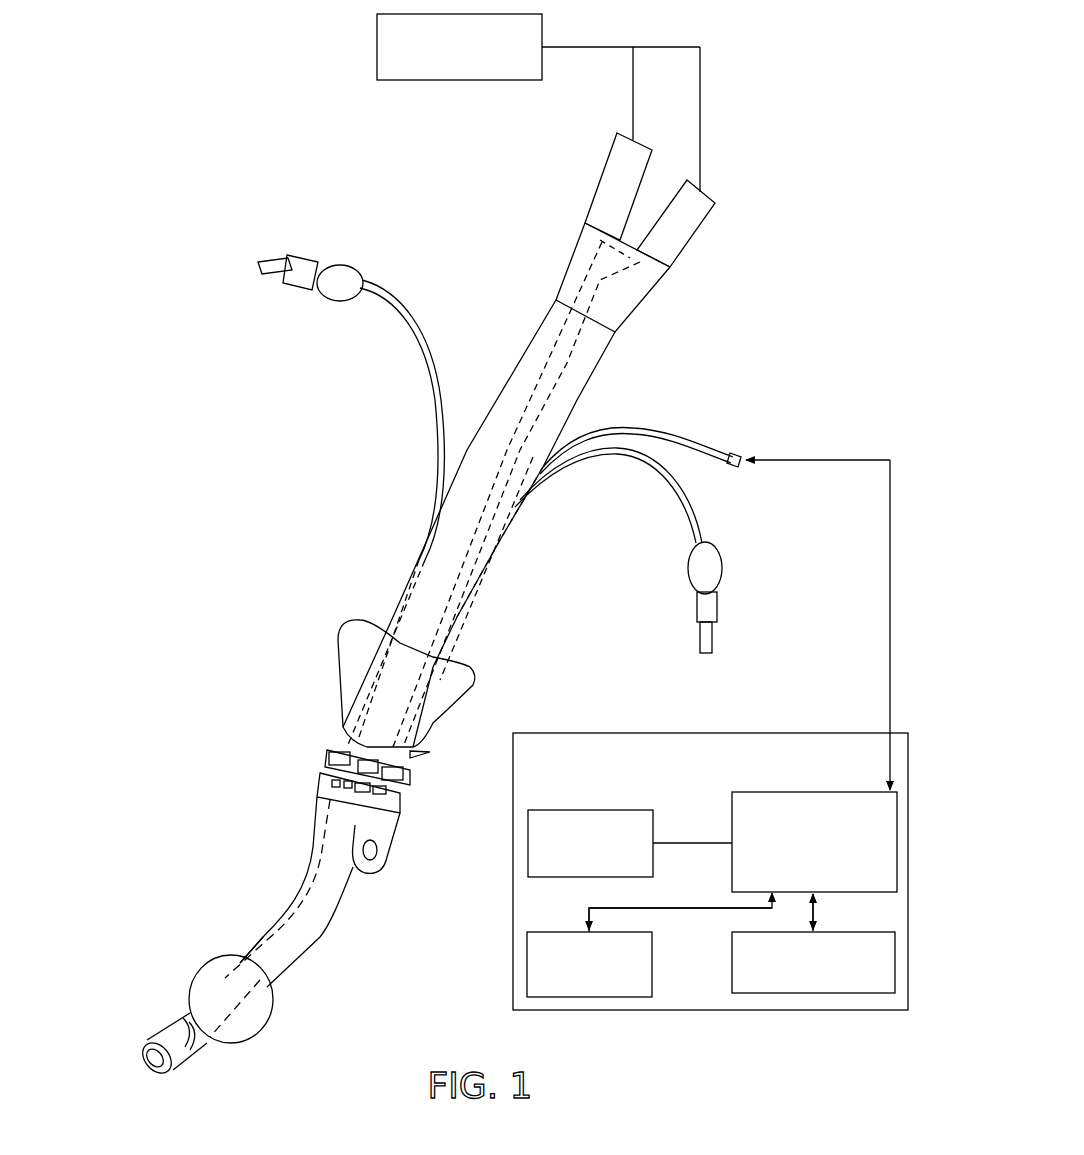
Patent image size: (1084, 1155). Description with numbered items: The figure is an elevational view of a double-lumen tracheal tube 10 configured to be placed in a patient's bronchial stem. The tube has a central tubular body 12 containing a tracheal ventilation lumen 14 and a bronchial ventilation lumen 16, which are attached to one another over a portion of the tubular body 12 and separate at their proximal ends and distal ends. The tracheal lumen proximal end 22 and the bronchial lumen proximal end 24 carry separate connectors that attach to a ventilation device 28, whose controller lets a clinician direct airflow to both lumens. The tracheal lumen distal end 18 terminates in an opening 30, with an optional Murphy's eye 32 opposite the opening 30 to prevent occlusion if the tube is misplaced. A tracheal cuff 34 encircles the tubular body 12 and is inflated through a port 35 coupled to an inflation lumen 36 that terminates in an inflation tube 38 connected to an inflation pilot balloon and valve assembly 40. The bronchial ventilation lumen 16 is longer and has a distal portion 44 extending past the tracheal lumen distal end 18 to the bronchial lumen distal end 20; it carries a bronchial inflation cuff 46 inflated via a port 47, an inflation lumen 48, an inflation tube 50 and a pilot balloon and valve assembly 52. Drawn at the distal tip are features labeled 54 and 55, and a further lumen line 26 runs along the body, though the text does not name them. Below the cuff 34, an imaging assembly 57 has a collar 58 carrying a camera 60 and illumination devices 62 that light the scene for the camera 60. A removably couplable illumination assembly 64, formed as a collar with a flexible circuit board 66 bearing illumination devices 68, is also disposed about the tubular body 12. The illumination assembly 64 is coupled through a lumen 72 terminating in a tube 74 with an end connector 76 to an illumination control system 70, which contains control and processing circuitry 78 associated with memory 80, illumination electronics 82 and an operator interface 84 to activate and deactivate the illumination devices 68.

The tracheal tube 10 is at (283, 152).
The central tubular body 12 is at (603, 370).
The tracheal ventilation lumen 14 is at (575, 368).
The bronchial ventilation lumen 16 is at (545, 347).
The tracheal lumen distal end 18 is at (405, 830).
The bronchial lumen distal end 20 is at (172, 1084).
The tracheal lumen proximal end 22 is at (720, 190).
The bronchial lumen proximal end 24 is at (617, 125).
The lumen 26 is at (468, 535).
The ventilation device 28 is at (377, 46).
The opening 30 is at (373, 873).
The Murphy's eye 32 is at (377, 850).
The tracheal cuff 34 is at (437, 718).
The port 35 is at (435, 682).
The inflation lumen 36 is at (473, 623).
The inflation tube 38 is at (622, 449).
The inflation pilot balloon and valve assembly 40 is at (722, 565).
The distal portion 44 is at (292, 913).
The bronchial inflation cuff 46 is at (258, 1037).
The port 47 is at (215, 975).
The inflation lumen 48 is at (313, 853).
The inflation tube 50 is at (415, 322).
The inflation pilot balloon and valve assembly 52 is at (300, 283).
The distal opening 54 is at (148, 1072).
The lumen opening 55 is at (146, 1055).
The imaging assembly 57 is at (310, 780).
The collar 58 is at (413, 800).
The camera 60 is at (327, 790).
The illumination devices 62 is at (350, 805).
The illumination assembly 64 is at (330, 747).
The flexible circuit board 66 is at (405, 775).
The illumination devices 68 is at (430, 752).
The illumination control system 70 is at (710, 733).
The lumen 72 is at (480, 588).
The tube 74 is at (648, 435).
The end connector 76 is at (733, 466).
The control and processing circuitry 78 is at (730, 818).
The memory 80 is at (527, 843).
The illumination electronics 82 is at (813, 993).
The operator interface 84 is at (589, 997).